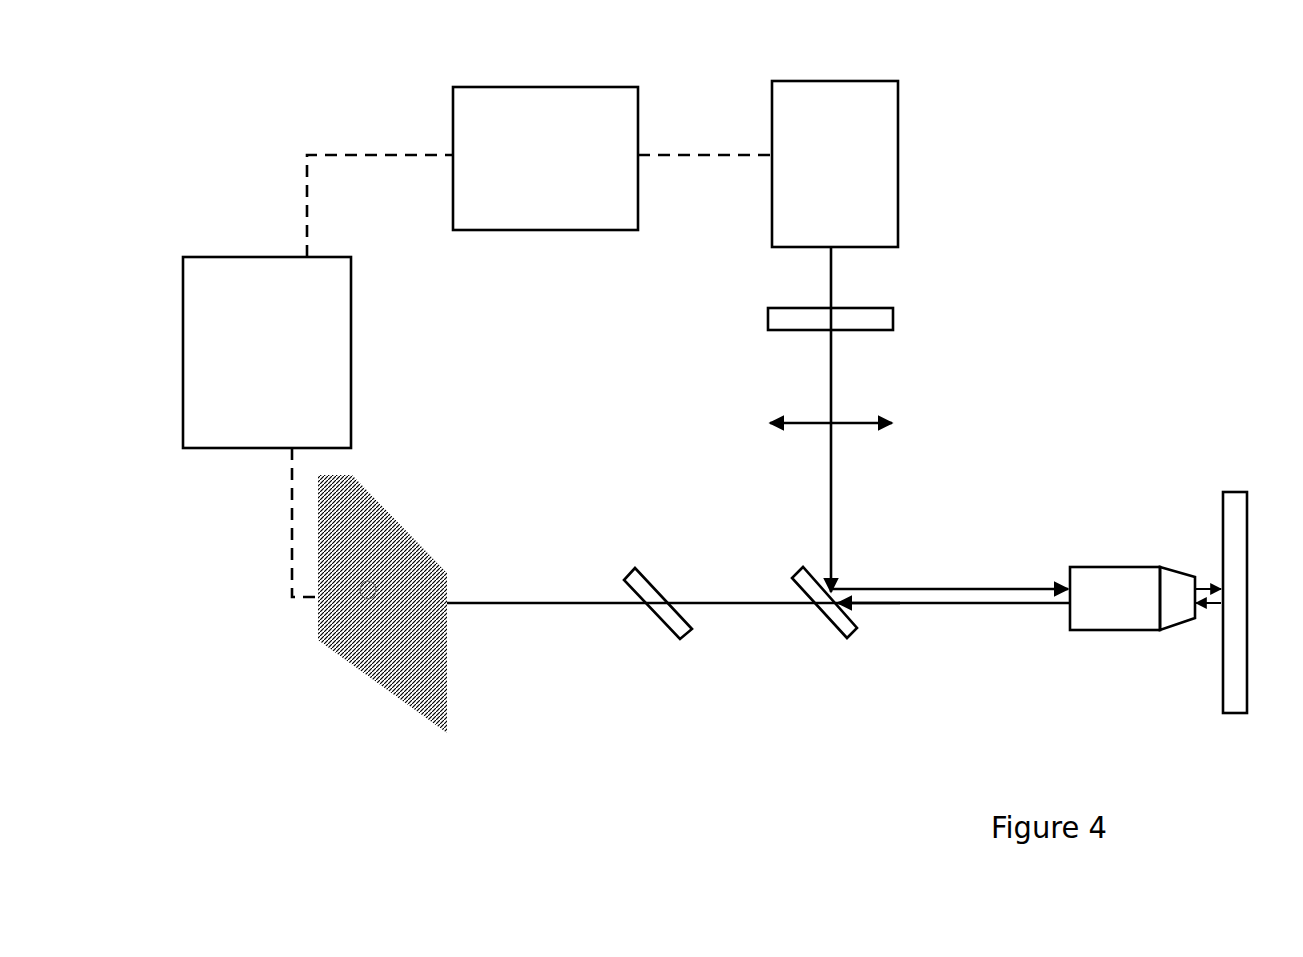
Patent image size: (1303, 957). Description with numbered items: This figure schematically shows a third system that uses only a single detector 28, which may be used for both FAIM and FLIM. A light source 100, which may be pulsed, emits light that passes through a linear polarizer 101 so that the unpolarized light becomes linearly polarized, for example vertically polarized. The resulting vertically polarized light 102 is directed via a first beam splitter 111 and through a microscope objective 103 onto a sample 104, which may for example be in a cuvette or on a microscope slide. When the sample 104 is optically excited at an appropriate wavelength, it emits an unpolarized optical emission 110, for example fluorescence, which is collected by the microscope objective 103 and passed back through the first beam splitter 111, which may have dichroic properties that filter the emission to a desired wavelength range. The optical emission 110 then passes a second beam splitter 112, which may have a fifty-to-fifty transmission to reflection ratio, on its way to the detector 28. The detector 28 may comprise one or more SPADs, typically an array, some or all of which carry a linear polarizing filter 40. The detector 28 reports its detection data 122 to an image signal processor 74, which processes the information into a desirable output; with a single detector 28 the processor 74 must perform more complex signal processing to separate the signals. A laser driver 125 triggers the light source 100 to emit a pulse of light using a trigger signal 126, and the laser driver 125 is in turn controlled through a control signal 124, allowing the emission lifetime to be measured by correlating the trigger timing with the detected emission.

The detector 28 is at (358, 474).
The linear polarizing filter 40 is at (367, 590).
The image signal processor 74 is at (228, 256).
The light source 100 is at (854, 81).
The linear polarizer 101 is at (895, 318).
The vertically polarized light 102 is at (840, 500).
The microscope objective 103 is at (1097, 566).
The sample 104 is at (1230, 490).
The optical emission 110 is at (985, 606).
The first beam splitter 111 is at (845, 643).
The second beam splitter 112 is at (680, 643).
The detection data 122 is at (287, 535).
The control signal 124 is at (360, 152).
The laser driver 125 is at (577, 86).
The trigger signal 126 is at (685, 150).